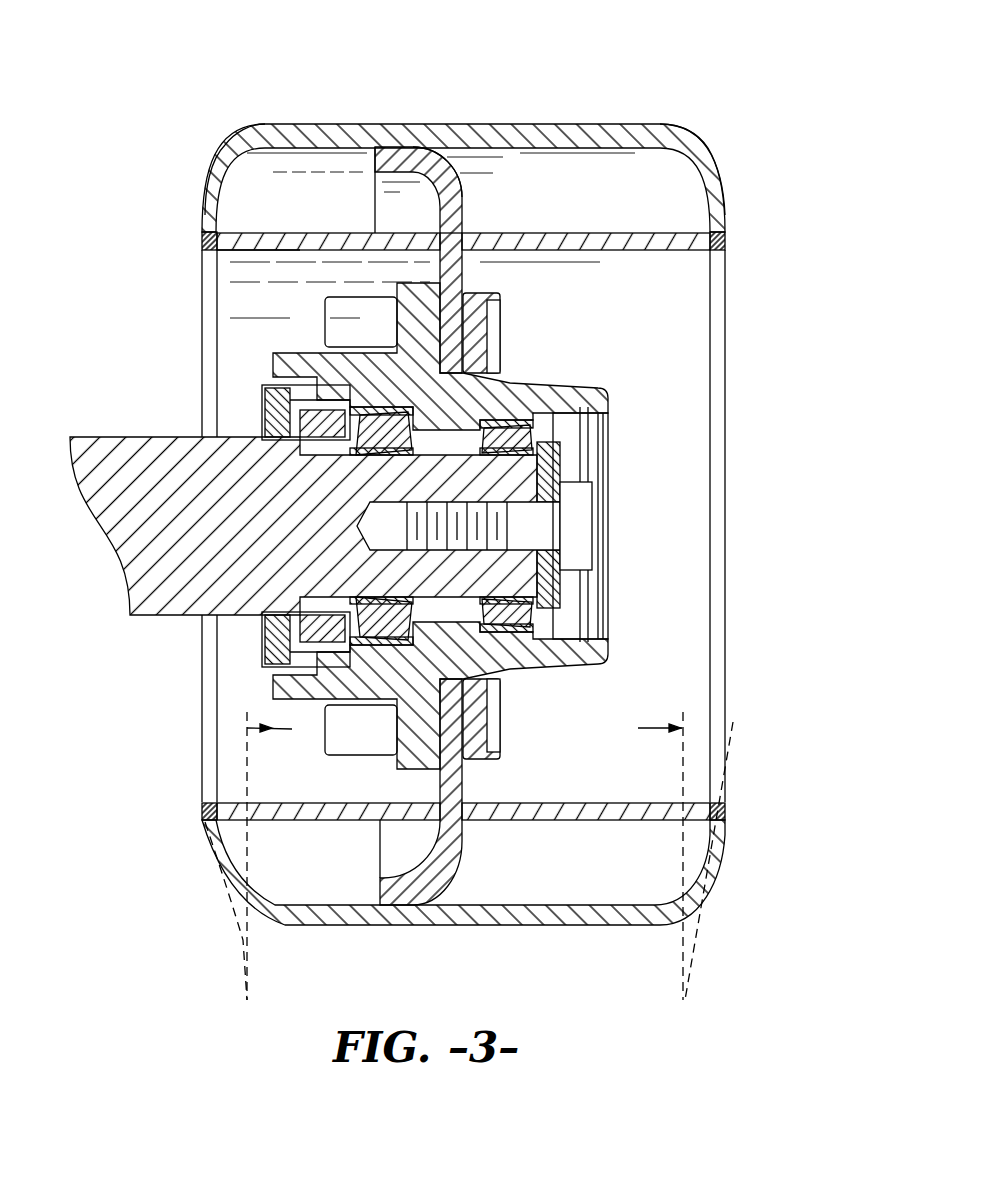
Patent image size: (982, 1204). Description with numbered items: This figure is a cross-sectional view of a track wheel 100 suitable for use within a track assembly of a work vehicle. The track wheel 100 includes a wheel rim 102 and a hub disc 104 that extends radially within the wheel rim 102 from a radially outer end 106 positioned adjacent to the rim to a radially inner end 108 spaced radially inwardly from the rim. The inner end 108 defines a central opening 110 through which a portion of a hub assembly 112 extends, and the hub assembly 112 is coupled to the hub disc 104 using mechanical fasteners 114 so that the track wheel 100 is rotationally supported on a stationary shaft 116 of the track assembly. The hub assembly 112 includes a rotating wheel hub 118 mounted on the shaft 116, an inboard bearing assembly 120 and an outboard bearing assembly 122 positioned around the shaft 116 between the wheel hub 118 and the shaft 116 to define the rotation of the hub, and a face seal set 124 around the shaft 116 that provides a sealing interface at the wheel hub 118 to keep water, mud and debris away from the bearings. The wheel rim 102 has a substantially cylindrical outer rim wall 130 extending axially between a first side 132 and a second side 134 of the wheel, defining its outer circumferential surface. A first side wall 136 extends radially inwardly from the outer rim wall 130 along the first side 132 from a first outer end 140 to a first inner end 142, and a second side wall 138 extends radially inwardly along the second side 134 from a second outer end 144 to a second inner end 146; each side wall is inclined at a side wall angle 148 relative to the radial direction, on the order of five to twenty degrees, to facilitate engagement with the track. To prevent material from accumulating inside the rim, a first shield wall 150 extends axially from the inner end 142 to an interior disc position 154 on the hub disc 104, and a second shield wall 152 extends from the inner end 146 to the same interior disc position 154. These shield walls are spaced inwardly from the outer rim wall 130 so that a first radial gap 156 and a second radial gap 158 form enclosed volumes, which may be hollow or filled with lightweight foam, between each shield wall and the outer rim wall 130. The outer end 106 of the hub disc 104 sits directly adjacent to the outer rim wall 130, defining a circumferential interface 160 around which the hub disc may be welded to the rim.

The track wheel 100 is at (157, 95).
The wheel rim 102 is at (428, 447).
The hub disc 104 is at (482, 777).
The radially outer end 106 is at (430, 225).
The radially inner end 108 is at (507, 400).
The central opening 110 is at (522, 653).
The hub assembly 112 is at (614, 497).
The mechanical fasteners 114 is at (503, 337).
The stationary shaft 116 is at (140, 435).
The wheel hub 118 is at (570, 655).
The inboard bearing assembly 120 is at (397, 640).
The outboard bearing assembly 122 is at (575, 400).
The face seal set 124 is at (273, 400).
The outer rim wall 130 is at (495, 123).
The first side 132 is at (126, 268).
The second side 134 is at (752, 330).
The first side wall 136 is at (210, 184).
The second side wall 138 is at (704, 176).
The first outer end 140 is at (237, 143).
The first inner end 142 is at (200, 230).
The second outer end 144 is at (684, 148).
The second inner end 146 is at (718, 226).
The side wall angle 148 is at (197, 732).
The first shield wall 150 is at (262, 252).
The second shield wall 152 is at (592, 248).
The interior disc position 154 is at (473, 228).
The first radial gap 156 is at (278, 213).
The second radial gap 158 is at (627, 208).
The circumferential interface 160 is at (390, 144).